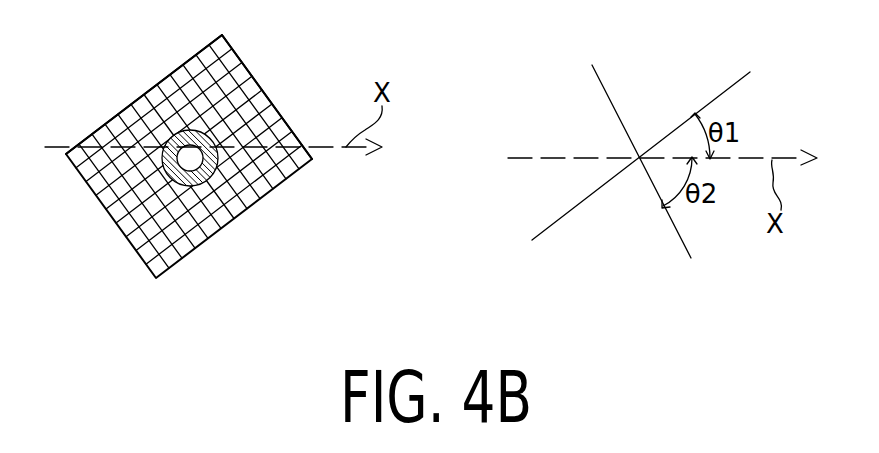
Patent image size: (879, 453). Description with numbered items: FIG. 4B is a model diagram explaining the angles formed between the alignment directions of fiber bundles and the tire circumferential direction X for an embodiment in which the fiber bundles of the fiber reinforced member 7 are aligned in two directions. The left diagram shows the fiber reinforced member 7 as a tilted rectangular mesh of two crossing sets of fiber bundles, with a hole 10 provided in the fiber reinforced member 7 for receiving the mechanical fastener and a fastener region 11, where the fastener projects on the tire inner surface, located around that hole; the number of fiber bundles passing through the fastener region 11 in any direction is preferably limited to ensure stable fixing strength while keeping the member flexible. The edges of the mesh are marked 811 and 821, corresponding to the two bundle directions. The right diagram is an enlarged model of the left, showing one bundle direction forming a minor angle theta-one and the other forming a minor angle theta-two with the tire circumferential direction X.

The fiber reinforced member 7 is at (247, 62).
The hole 10 is at (163, 163).
The fastener region 11 is at (171, 185).
The first grid line end edge 811 is at (258, 72).
The second grid line end edge 821 is at (118, 100).